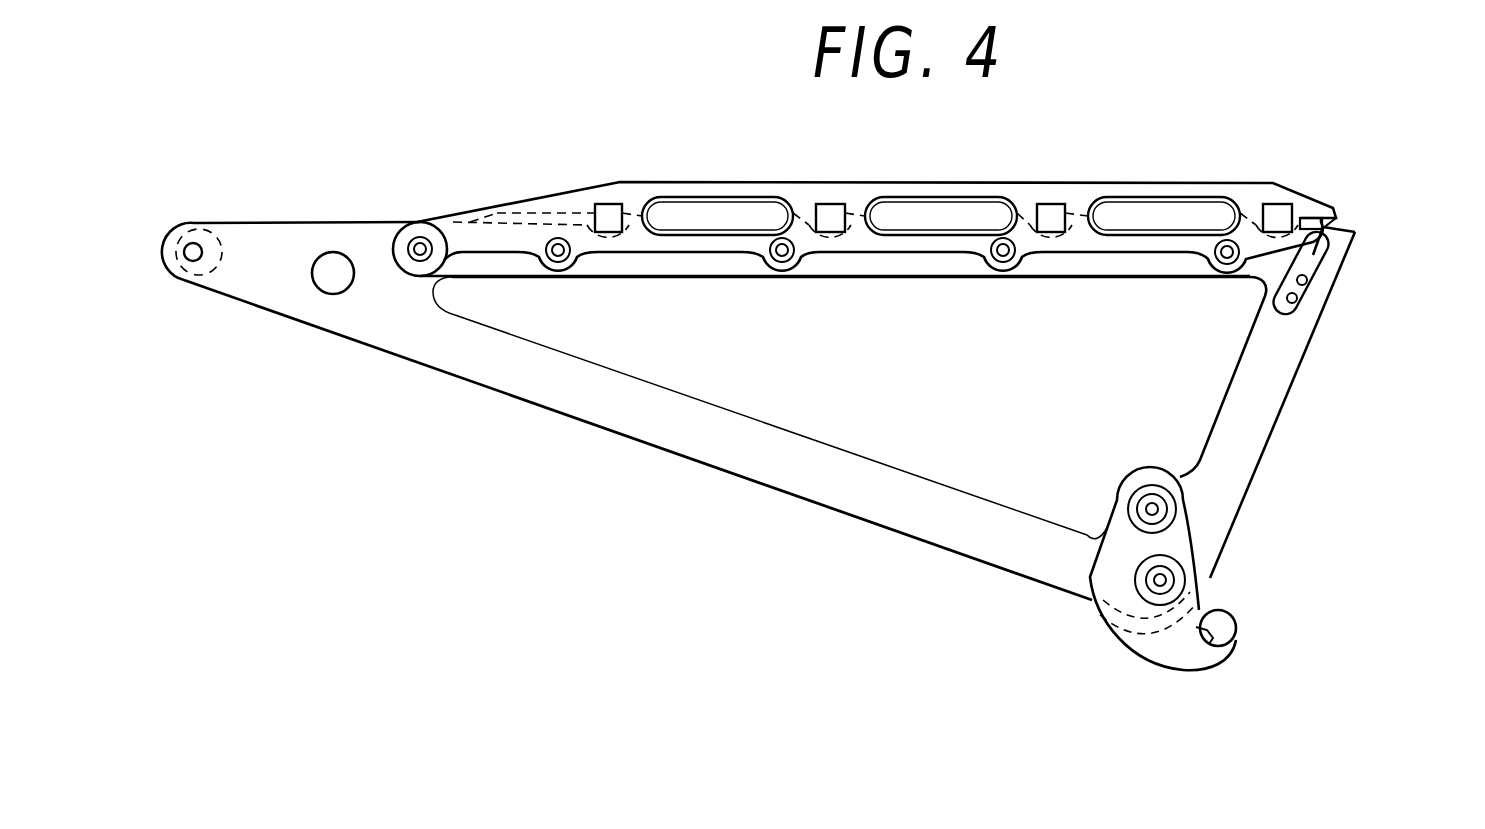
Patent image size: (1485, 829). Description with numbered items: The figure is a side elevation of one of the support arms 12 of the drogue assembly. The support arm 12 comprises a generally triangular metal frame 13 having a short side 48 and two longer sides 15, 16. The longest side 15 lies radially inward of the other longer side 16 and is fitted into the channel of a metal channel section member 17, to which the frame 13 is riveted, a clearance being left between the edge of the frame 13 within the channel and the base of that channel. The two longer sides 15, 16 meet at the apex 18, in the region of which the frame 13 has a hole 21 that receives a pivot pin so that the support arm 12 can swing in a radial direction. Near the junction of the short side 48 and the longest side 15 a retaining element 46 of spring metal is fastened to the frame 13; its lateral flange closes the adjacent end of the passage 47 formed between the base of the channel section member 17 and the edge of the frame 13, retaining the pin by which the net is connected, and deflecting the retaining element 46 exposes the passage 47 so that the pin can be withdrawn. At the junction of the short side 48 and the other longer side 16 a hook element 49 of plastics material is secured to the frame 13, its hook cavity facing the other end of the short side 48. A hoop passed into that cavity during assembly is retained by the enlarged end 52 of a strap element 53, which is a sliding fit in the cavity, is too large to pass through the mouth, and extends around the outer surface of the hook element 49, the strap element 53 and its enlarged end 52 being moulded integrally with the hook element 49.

The support arm 12 is at (706, 502).
The frame 13 is at (538, 388).
The longer side 15 is at (930, 266).
The longer side 16 is at (950, 518).
The channel section member 17 is at (833, 197).
The apex 18 is at (200, 228).
The hole 21 is at (195, 238).
The retaining element 46 is at (1322, 258).
The passage 47 is at (1252, 210).
The short side 48 is at (1253, 418).
The hook element 49 is at (1135, 637).
The enlarged end 52 is at (1230, 657).
The strap element 53 is at (1198, 620).